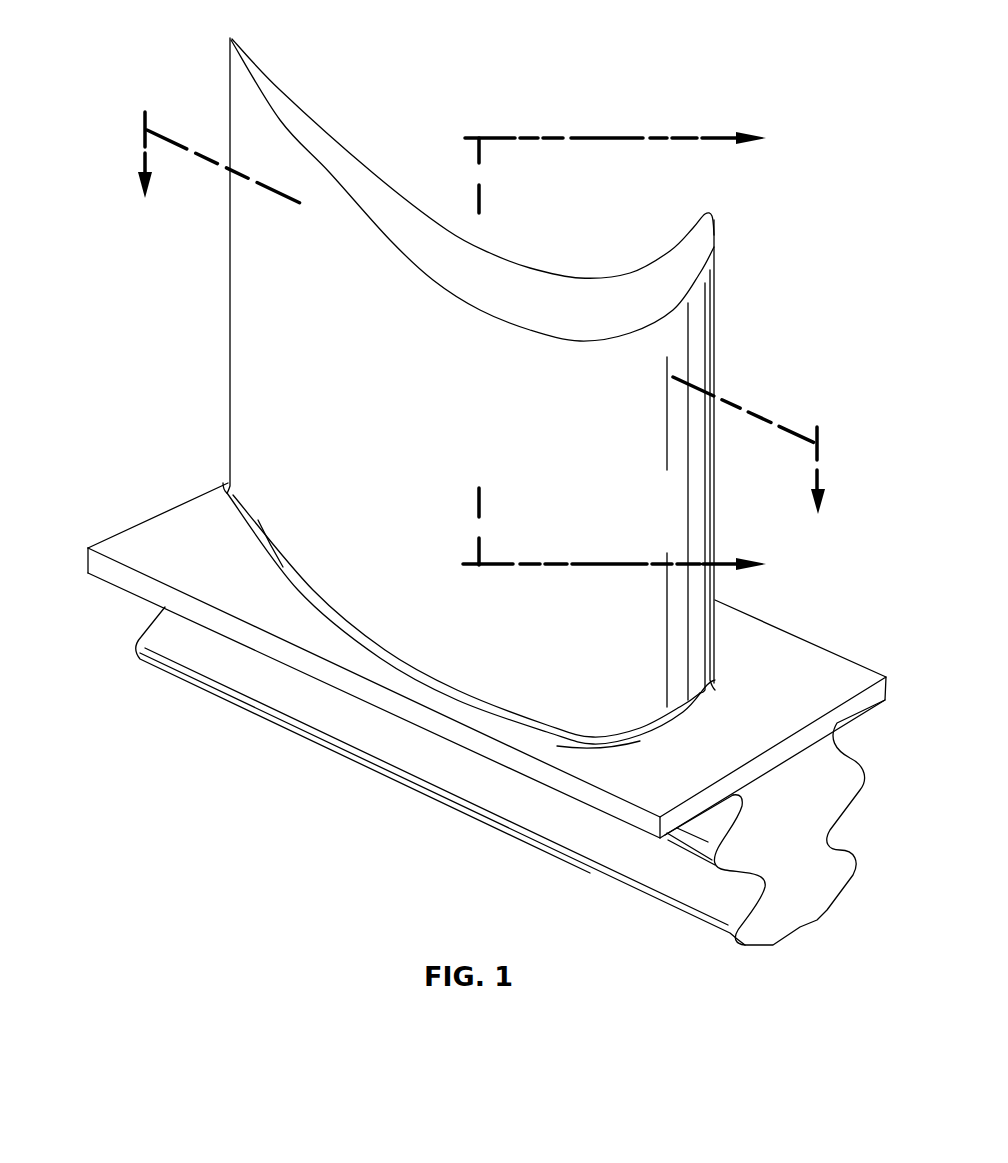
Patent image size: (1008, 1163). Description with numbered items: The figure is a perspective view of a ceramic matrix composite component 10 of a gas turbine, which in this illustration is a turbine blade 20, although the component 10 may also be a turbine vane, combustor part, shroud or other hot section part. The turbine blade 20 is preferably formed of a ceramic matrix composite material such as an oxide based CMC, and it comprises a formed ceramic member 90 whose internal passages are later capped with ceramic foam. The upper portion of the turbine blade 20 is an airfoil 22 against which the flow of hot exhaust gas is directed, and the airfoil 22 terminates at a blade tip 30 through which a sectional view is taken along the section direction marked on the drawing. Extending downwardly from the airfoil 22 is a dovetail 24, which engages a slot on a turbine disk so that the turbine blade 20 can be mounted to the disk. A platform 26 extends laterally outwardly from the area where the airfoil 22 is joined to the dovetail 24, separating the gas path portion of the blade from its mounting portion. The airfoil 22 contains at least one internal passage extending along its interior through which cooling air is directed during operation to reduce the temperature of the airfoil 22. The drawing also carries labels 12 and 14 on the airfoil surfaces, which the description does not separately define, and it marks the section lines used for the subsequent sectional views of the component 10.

The ceramic matrix composite component 10 is at (558, 70).
The turbine blade 20 is at (167, 298).
The airfoil 22 is at (248, 120).
The blade tip 30 is at (372, 197).
The pressure side 12 is at (530, 268).
The suction side 14 is at (303, 402).
The formed ceramic member 90 is at (747, 293).
The platform 26 is at (153, 540).
The dovetail 24 is at (140, 632).